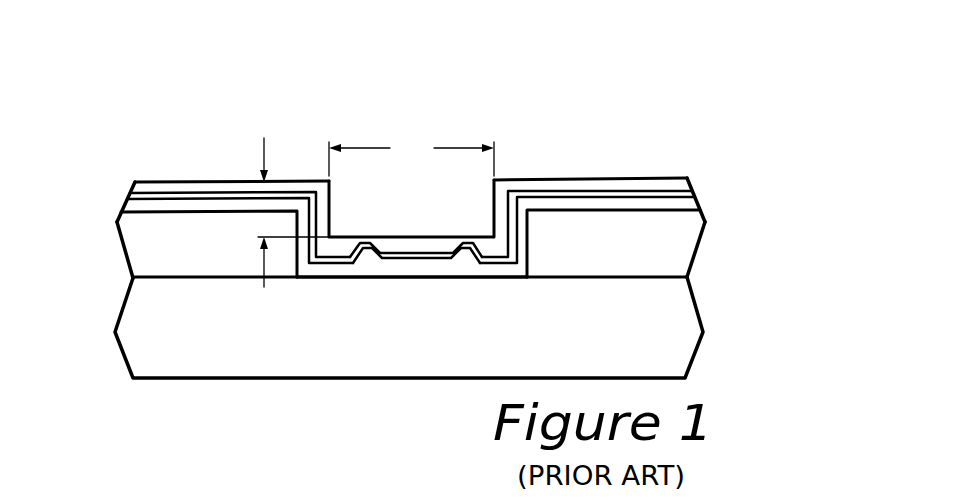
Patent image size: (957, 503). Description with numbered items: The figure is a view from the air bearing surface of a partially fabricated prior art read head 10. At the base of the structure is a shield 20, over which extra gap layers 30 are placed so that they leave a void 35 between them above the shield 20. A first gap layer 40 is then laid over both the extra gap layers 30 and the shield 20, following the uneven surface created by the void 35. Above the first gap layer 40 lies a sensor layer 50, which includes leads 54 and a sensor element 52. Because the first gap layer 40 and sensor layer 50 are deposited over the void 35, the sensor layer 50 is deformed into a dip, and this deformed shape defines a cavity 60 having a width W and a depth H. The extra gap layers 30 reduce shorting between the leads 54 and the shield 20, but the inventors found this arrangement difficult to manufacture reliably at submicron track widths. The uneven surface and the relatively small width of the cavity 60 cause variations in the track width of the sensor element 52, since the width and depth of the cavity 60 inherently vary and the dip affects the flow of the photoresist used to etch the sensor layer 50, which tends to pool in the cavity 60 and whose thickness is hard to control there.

The read head 10 is at (660, 158).
The shield 20 is at (178, 342).
The extra gap layers 30 is at (178, 263).
The void 35 is at (388, 288).
The first gap layer 40 is at (160, 205).
The sensor layer 50 is at (706, 181).
The sensor element 52 is at (392, 255).
The leads 54 is at (608, 193).
The cavity 60 is at (460, 205).